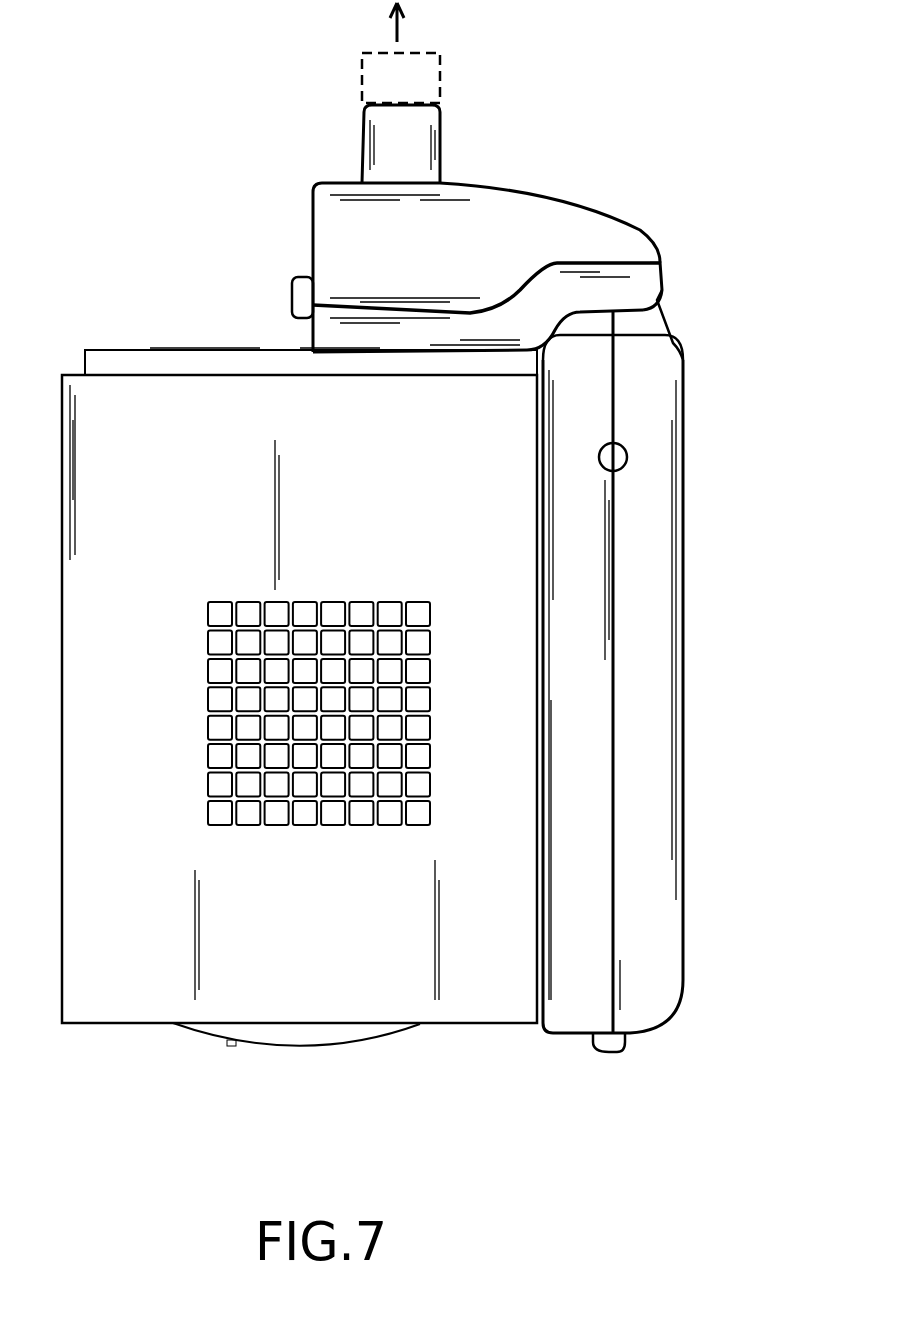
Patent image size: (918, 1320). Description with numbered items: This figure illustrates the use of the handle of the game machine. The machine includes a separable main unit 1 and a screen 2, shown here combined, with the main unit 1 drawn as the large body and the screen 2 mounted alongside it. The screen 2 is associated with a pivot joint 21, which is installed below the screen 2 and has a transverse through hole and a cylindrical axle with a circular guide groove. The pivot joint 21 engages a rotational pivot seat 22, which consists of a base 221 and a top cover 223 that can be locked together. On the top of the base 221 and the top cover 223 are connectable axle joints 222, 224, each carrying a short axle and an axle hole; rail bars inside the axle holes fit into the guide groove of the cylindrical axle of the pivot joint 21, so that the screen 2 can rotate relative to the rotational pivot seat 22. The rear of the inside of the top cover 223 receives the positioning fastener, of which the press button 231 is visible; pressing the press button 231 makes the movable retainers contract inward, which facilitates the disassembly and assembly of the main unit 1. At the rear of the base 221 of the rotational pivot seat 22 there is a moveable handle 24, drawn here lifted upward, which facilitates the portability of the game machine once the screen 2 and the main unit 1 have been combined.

The main unit 1 is at (112, 1007).
The screen 2 is at (496, 526).
The pivot joint 21 is at (647, 317).
The rotational pivot seat 22 is at (481, 176).
The base 221 is at (325, 210).
The axle joint 222 is at (617, 240).
The top cover 223 is at (332, 332).
The axle joint 224 is at (643, 287).
The press button 231 is at (300, 298).
The moveable handle 24 is at (370, 95).